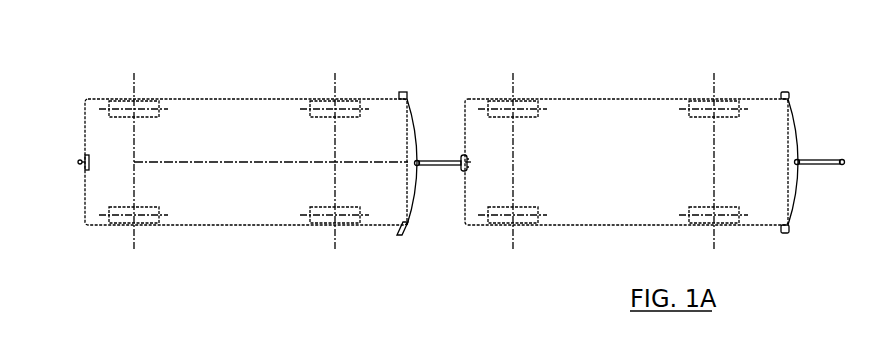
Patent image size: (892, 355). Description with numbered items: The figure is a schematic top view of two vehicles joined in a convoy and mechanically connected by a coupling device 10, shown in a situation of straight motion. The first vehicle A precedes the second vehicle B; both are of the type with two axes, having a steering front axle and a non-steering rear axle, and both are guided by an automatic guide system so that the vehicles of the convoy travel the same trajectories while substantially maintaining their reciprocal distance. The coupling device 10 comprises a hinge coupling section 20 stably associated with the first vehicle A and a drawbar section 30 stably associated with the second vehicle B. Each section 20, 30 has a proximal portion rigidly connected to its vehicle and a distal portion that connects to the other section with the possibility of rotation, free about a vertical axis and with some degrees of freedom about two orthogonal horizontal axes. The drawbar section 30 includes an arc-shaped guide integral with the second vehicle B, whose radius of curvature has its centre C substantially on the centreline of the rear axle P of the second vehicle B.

The coupling device 10 is at (437, 106).
The hinge coupling section 20 is at (472, 176).
The drawbar section 30 is at (425, 176).
The first vehicle A is at (625, 117).
The second vehicle B is at (212, 117).
The centre of the radius of curvature C is at (120, 149).
The rear axle P is at (133, 183).